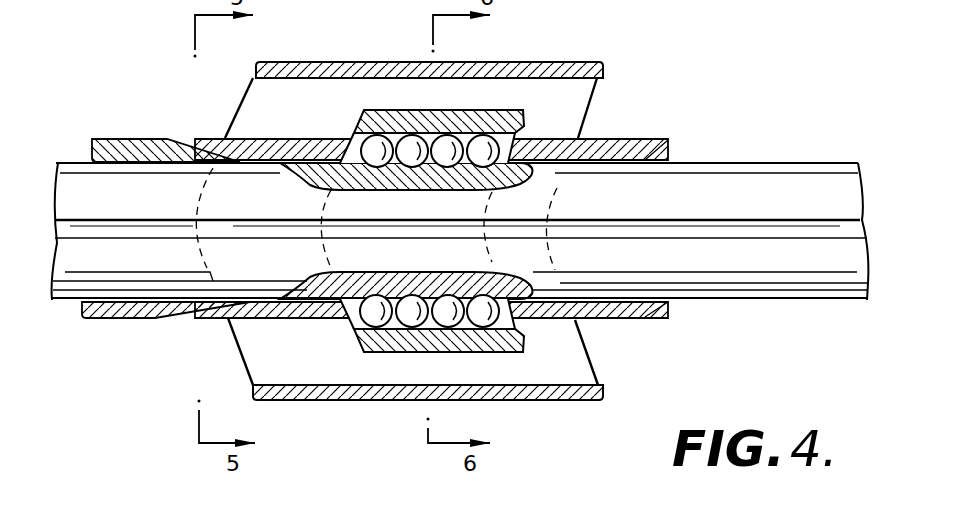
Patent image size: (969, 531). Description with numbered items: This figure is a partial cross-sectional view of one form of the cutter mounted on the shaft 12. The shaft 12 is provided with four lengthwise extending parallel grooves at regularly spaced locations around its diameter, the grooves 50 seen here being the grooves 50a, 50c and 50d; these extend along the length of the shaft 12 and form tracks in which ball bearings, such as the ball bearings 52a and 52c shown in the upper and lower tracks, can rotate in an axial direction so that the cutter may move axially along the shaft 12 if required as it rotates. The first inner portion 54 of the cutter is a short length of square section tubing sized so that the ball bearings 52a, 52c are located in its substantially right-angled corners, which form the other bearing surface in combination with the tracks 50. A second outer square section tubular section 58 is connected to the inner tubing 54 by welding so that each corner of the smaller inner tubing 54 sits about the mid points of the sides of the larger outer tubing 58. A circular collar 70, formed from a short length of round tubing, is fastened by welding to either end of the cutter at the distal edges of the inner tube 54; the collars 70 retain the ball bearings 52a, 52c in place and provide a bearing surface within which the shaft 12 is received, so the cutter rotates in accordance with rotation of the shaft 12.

The shaft 12 is at (695, 187).
The grooves 50 is at (753, 210).
The groove 50a is at (304, 163).
The groove 50c is at (327, 277).
The groove 50d is at (112, 228).
The ball bearing 52a is at (483, 143).
The ball bearing 52c is at (412, 320).
The first inner portion of square section tubing 54 is at (383, 117).
The second outer square section tubular section 58 is at (580, 62).
The circular collar 70 is at (647, 140).